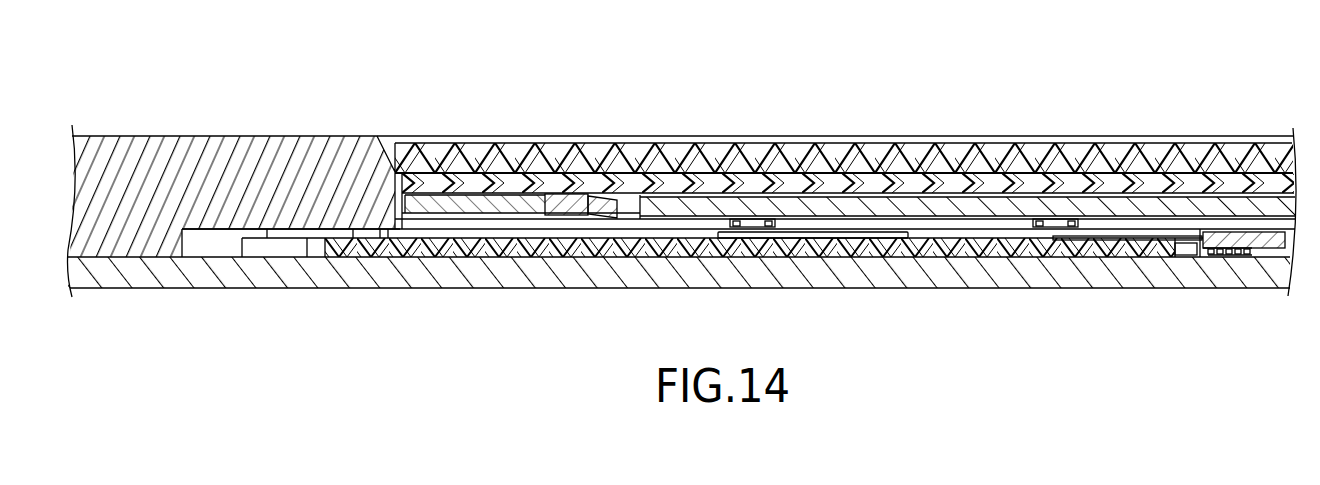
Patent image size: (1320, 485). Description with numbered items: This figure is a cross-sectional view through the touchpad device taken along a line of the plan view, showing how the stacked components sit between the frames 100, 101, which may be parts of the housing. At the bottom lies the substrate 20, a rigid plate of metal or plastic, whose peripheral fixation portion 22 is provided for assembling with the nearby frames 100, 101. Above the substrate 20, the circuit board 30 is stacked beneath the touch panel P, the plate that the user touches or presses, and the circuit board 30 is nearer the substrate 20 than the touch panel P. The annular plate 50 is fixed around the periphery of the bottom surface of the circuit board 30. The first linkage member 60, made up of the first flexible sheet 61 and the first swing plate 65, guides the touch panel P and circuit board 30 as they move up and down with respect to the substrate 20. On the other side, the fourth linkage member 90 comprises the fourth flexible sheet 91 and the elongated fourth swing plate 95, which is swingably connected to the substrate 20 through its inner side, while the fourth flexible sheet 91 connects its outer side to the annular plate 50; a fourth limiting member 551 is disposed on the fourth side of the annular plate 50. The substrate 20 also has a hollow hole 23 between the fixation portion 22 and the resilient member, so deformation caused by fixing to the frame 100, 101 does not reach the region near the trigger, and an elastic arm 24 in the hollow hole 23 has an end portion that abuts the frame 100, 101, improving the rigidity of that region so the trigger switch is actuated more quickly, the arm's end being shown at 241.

The frame 100 is at (155, 288).
The frame 101 is at (206, 278).
The fixation portion 22 is at (281, 247).
The substrate 20 is at (357, 243).
The touch panel P is at (517, 160).
The circuit board 30 is at (575, 190).
The annular plate 50 is at (481, 204).
The first linkage member 60 is at (569, 283).
The first flexible sheet 61 is at (547, 214).
The first swing plate 65 is at (591, 218).
The fourth linkage member 90 is at (637, 208).
The fourth flexible sheet 91 is at (981, 218).
The fourth limiting member 551 is at (1050, 227).
The fourth swing plate 95 is at (1118, 203).
The hollow hole 23 is at (1184, 254).
The elastic arm 24 is at (1237, 247).
The bumps of bonding pad 241 is at (1243, 256).